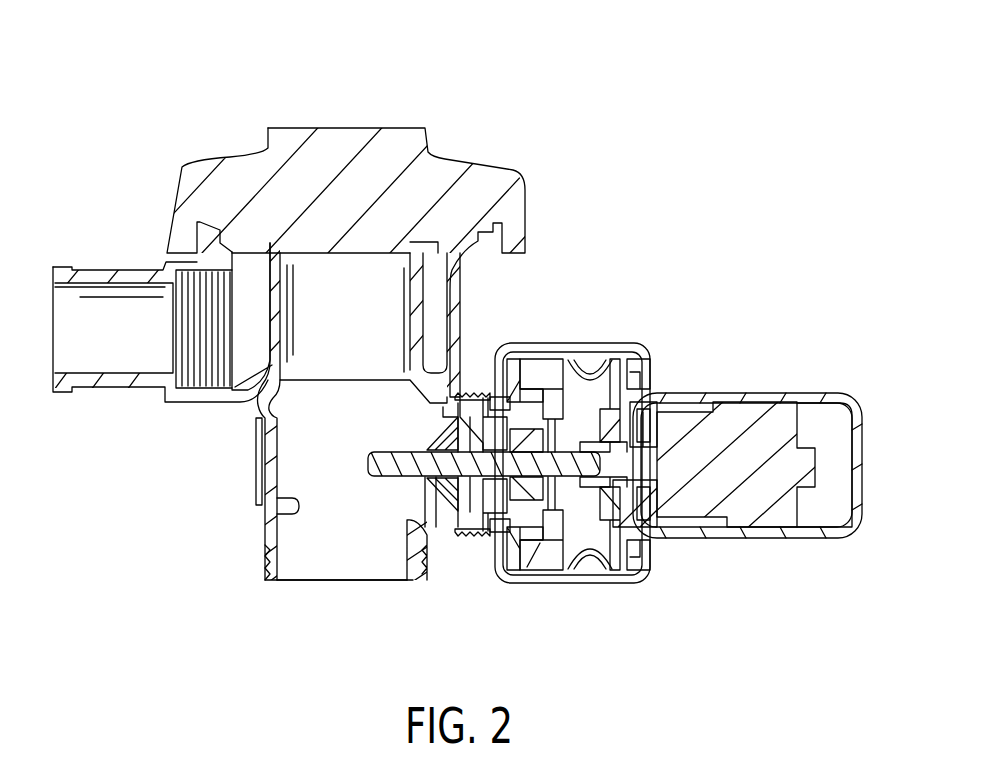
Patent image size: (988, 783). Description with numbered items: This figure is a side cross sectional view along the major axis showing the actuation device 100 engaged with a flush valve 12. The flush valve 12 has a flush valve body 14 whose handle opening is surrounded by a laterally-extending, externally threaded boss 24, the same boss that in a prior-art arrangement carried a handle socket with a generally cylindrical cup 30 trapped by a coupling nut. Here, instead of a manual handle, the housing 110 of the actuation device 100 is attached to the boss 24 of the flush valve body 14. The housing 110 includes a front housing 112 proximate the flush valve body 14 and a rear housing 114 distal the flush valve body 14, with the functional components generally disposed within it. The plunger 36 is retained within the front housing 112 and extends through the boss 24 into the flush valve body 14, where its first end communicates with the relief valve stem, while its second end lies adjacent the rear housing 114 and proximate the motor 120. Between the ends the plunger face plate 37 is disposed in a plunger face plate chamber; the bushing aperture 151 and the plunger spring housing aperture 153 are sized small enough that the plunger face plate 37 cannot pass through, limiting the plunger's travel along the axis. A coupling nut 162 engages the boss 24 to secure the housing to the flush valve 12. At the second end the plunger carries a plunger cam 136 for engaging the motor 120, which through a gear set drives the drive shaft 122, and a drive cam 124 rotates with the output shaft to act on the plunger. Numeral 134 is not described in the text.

The flush valve 12 is at (230, 176).
The flush valve body 14 is at (455, 108).
The boss 24 is at (443, 528).
The cup 30 is at (405, 500).
The plunger 36 is at (387, 478).
The plunger face plate 37 is at (546, 359).
The actuation device 100 is at (645, 150).
The housing 110 is at (658, 298).
The front housing 112 is at (520, 583).
The rear housing 114 is at (862, 467).
The motor 120 is at (758, 470).
The drive shaft 122 is at (653, 467).
The drive cam 124 is at (660, 548).
The lower valve member 134 is at (538, 480).
The plunger cam 136 is at (608, 370).
The bushing aperture 151 is at (430, 477).
The plunger spring housing aperture 153 is at (578, 370).
The coupling nut 162 is at (491, 390).